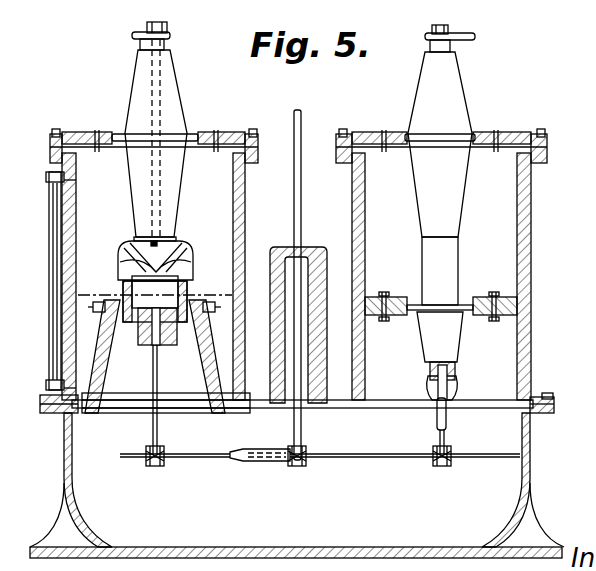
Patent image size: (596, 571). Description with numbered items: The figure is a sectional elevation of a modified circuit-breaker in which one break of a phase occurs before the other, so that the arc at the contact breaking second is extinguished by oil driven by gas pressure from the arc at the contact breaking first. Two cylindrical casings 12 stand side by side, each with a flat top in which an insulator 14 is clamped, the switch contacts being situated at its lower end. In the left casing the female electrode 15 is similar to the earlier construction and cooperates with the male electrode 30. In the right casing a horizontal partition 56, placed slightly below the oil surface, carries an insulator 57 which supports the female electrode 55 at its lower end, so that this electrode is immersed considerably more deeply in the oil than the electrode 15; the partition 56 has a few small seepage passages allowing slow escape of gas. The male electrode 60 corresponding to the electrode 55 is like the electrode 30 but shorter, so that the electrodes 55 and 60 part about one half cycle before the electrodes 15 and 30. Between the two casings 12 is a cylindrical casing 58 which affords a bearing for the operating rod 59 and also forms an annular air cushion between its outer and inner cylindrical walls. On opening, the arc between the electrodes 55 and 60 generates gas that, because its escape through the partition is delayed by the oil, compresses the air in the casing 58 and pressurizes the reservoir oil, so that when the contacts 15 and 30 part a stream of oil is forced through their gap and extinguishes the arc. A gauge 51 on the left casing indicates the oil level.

The casing 12 is at (531, 307).
The insulator 14 is at (172, 106).
The female electrode 15 is at (162, 340).
The male electrode 30 is at (148, 340).
The gauge 51 is at (58, 266).
The female electrode 55 is at (456, 388).
The horizontal partition 56 is at (510, 296).
The insulator 57 is at (445, 336).
The cylindrical casing 58 is at (310, 247).
The operating rod 59 is at (302, 190).
The male electrode 60 is at (447, 414).